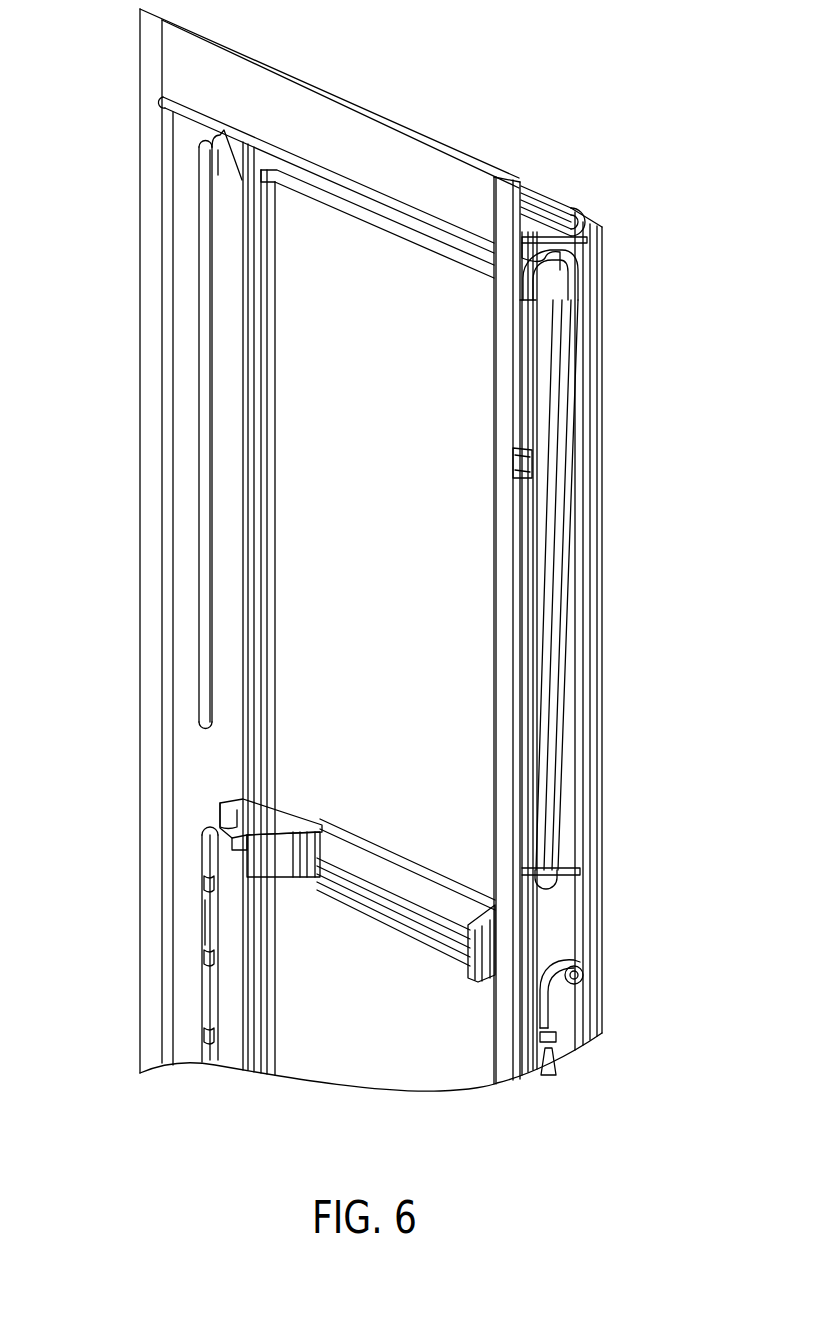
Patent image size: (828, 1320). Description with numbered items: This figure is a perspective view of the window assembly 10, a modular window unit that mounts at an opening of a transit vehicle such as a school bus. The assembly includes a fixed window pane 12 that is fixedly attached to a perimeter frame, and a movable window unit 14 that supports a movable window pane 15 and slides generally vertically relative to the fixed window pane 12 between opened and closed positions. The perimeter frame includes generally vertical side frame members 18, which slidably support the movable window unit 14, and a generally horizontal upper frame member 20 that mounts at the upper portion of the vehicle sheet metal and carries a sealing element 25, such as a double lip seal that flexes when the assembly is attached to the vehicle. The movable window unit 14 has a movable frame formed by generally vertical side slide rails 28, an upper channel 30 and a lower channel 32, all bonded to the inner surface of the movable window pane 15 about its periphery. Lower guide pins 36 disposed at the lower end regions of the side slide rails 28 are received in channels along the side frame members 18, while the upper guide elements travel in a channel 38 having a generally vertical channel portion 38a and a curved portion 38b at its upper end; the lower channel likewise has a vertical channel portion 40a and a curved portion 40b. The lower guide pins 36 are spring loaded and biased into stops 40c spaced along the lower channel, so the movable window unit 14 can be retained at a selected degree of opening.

The window assembly 10 is at (522, 88).
The fixed window pane 12 is at (383, 1075).
The movable window unit 14 is at (305, 390).
The movable window pane 15 is at (390, 550).
The side frame members 18 is at (187, 775).
The upper frame member 20 is at (532, 224).
The sealing element 25 is at (565, 220).
The side slide rails 28 is at (267, 595).
The upper channel 30 is at (401, 222).
The lower channel 32 is at (408, 878).
The lower guide pins 36 is at (283, 822).
The channel 38 is at (204, 373).
The vertical channel portion 38a is at (205, 305).
The curved portion 38b is at (208, 147).
The vertical channel portion 40a is at (212, 962).
The curved portion 40b is at (565, 985).
The stops 40c is at (212, 890).